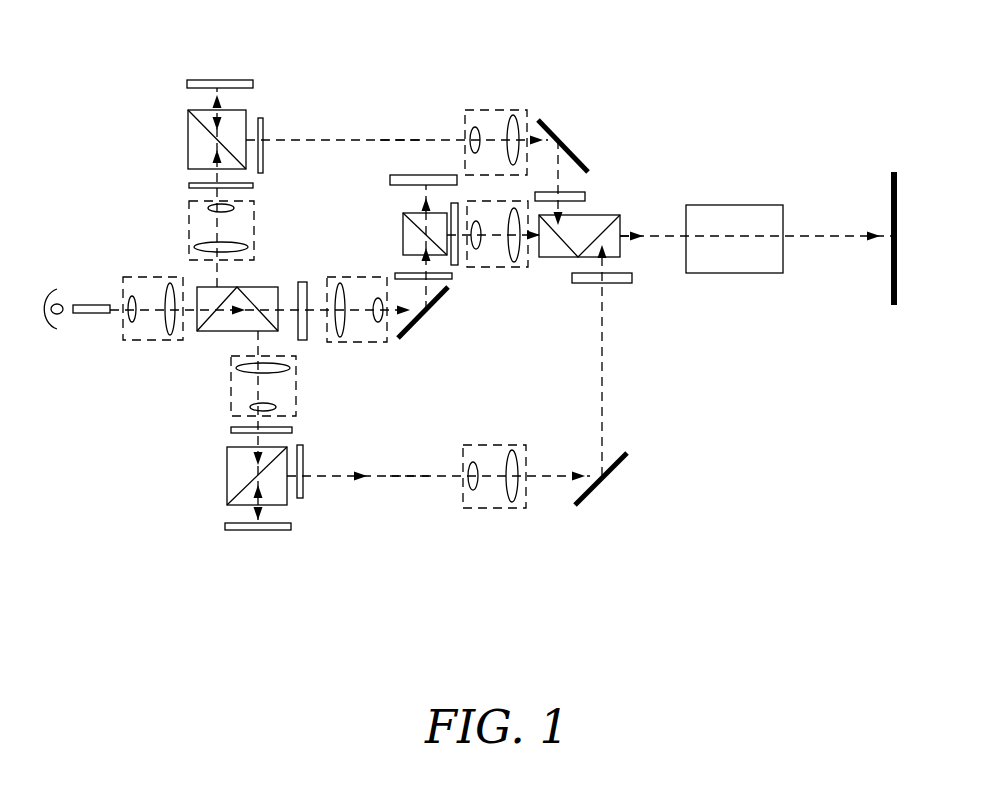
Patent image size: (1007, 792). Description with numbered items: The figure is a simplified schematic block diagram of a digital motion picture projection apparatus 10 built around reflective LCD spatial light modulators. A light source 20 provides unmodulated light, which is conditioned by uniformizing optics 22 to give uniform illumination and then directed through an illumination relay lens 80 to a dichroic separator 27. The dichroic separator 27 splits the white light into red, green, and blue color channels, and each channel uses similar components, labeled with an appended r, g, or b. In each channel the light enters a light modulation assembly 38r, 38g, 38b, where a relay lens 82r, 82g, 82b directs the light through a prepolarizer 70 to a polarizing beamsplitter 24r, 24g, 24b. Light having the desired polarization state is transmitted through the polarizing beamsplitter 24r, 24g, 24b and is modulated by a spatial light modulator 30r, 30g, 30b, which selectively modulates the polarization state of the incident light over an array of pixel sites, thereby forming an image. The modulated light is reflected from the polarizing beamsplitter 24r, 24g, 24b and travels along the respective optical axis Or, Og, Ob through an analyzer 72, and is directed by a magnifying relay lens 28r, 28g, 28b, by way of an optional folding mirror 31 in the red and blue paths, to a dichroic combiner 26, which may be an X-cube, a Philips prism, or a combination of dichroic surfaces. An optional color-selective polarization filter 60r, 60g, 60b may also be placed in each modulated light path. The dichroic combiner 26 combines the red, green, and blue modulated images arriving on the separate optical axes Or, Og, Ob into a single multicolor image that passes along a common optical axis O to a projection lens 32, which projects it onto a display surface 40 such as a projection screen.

The digital motion picture projection apparatus 10 is at (779, 440).
The light source 20 is at (48, 330).
The uniformizing optics 22 is at (90, 313).
The illumination relay lens 80 is at (145, 277).
The dichroic separator 27 is at (270, 287).
The relay lens 82b is at (254, 230).
The relay lens 82g is at (380, 345).
The relay lens 82r is at (231, 385).
The prepolarizer 70 is at (253, 186).
The analyzer 72 is at (263, 125).
The polarizing beamsplitter 24b is at (190, 115).
The polarizing beamsplitter 24g is at (403, 220).
The polarizing beamsplitter 24r is at (227, 470).
The spatial light modulator 30b is at (228, 80).
The spatial light modulator 30g is at (420, 177).
The spatial light modulator 30r is at (240, 531).
The light modulation assembly 38b is at (140, 193).
The light modulation assembly 38g is at (427, 331).
The light modulation assembly 38r is at (277, 550).
The color-selective polarization filter 60g is at (305, 340).
The color-selective polarization filter 60b is at (585, 195).
The color-selective polarization filter 60r is at (620, 283).
The magnifying relay lens 28b is at (490, 110).
The magnifying relay lens 28g is at (495, 268).
The magnifying relay lens 28r is at (495, 508).
The folding mirror 31 is at (560, 130).
The dichroic combiner 26 is at (560, 258).
The projection lens 32 is at (735, 273).
The display surface 40 is at (890, 210).
The common optical axis O is at (640, 237).
The optical axis Ob is at (400, 140).
The optical axis Og is at (540, 268).
The optical axis Or is at (405, 480).